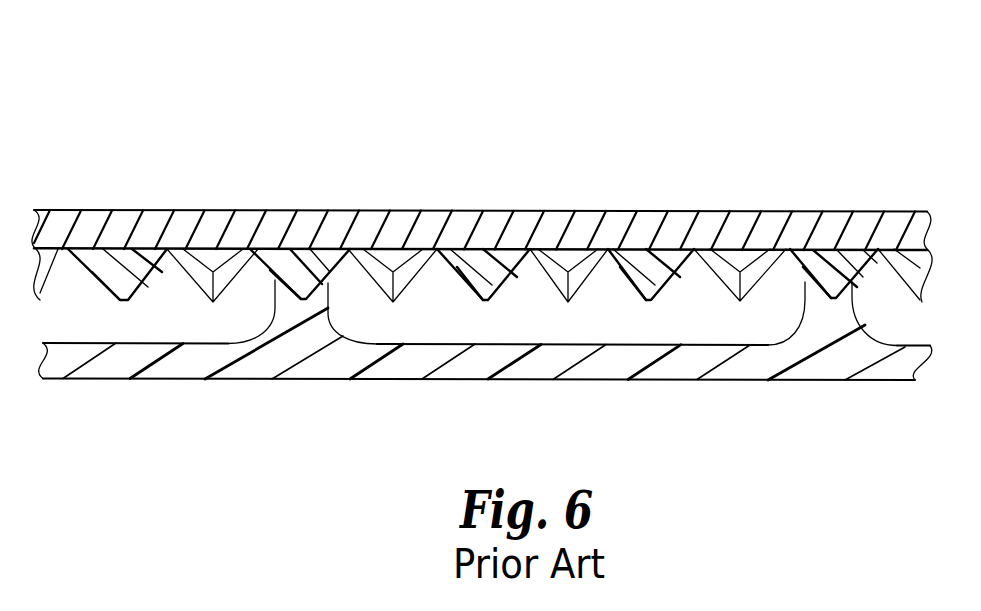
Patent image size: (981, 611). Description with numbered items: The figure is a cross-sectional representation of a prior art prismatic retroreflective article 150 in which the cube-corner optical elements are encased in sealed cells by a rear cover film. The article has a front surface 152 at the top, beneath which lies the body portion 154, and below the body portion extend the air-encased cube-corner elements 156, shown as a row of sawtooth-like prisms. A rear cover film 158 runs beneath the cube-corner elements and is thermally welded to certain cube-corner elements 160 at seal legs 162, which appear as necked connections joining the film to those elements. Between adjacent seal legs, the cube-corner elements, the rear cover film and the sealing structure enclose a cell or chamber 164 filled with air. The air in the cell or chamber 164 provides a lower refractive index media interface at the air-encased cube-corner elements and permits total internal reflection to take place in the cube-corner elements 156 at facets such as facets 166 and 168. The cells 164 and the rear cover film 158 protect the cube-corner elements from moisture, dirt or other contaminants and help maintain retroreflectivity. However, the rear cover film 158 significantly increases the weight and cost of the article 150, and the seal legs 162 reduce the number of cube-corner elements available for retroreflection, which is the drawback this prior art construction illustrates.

The prismatic retroreflective article 150 is at (740, 121).
The front surface 152 is at (438, 208).
The body portion 154 is at (520, 222).
The air-encased cube-corner elements 156 is at (648, 267).
The rear cover film 158 is at (682, 362).
The cube-corner elements 160 is at (300, 272).
The seal legs 162 is at (298, 313).
The cell or chamber 164 is at (453, 322).
The facet 166 is at (586, 283).
The facet 168 is at (510, 278).